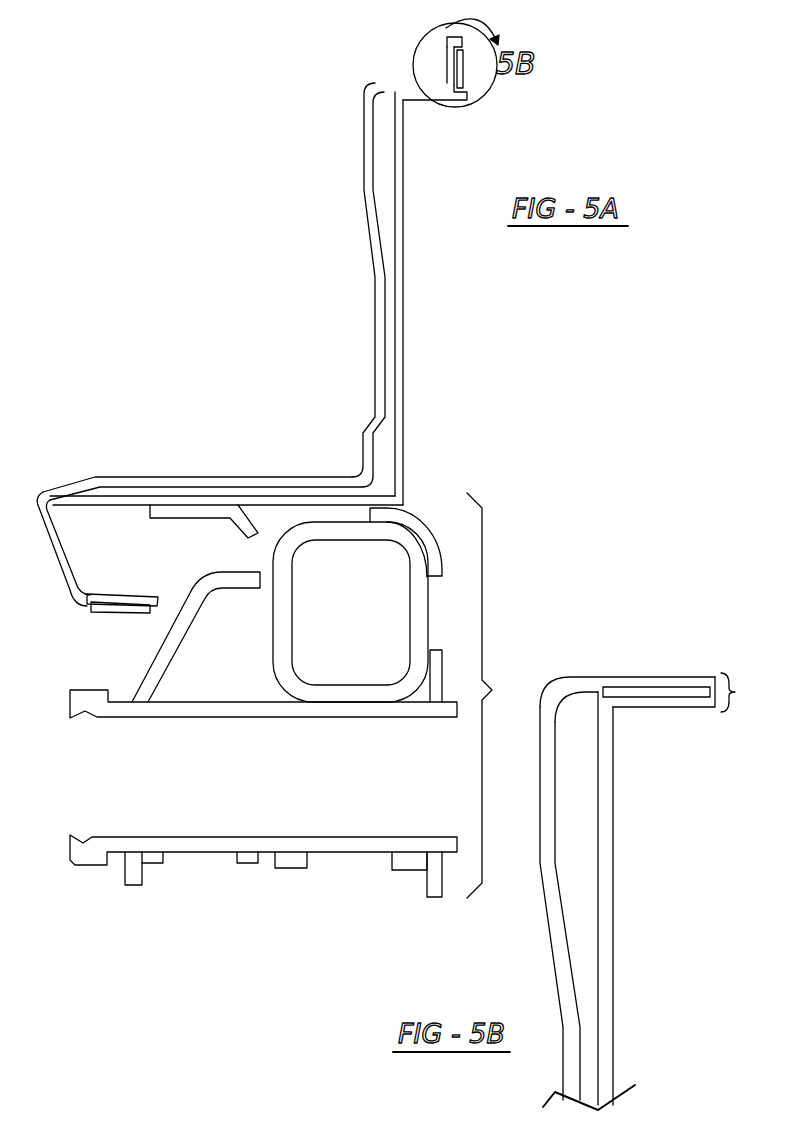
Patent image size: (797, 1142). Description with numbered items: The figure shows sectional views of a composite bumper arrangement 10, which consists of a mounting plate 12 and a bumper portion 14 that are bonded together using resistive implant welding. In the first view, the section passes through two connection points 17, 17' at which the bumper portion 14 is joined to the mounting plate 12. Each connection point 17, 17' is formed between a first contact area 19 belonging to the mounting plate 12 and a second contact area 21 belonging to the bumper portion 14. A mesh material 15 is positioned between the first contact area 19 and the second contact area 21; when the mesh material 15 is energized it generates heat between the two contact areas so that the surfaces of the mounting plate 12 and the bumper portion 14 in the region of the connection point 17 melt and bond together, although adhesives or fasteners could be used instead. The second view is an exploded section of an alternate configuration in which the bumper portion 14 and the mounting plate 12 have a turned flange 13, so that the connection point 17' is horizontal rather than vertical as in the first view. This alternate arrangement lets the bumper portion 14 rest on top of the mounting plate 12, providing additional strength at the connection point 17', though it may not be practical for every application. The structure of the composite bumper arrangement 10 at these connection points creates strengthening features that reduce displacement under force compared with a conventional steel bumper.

In FIG. 5A, the composite bumper arrangement 10 is at (155, 240).
In FIG. 5A, the mounting plate 12 is at (405, 288).
In FIG. 5B, the mounting plate 12 is at (603, 902).
In FIG. 5B, the turned flange 13 is at (741, 692).
In FIG. 5A, the bumper portion 14 is at (82, 478).
In FIG. 5B, the bumper portion 14 is at (583, 680).
In FIG. 5A, the mesh material 15 is at (100, 601).
In FIG. 5B, the mesh material 15 is at (663, 692).
In FIG. 5A, the connection point 17 is at (53, 586).
In FIG. 5B, the connection point 17' is at (669, 735).
In FIG. 5A, the first contact area 19 is at (110, 596).
In FIG. 5A, the second contact area 21 is at (127, 612).